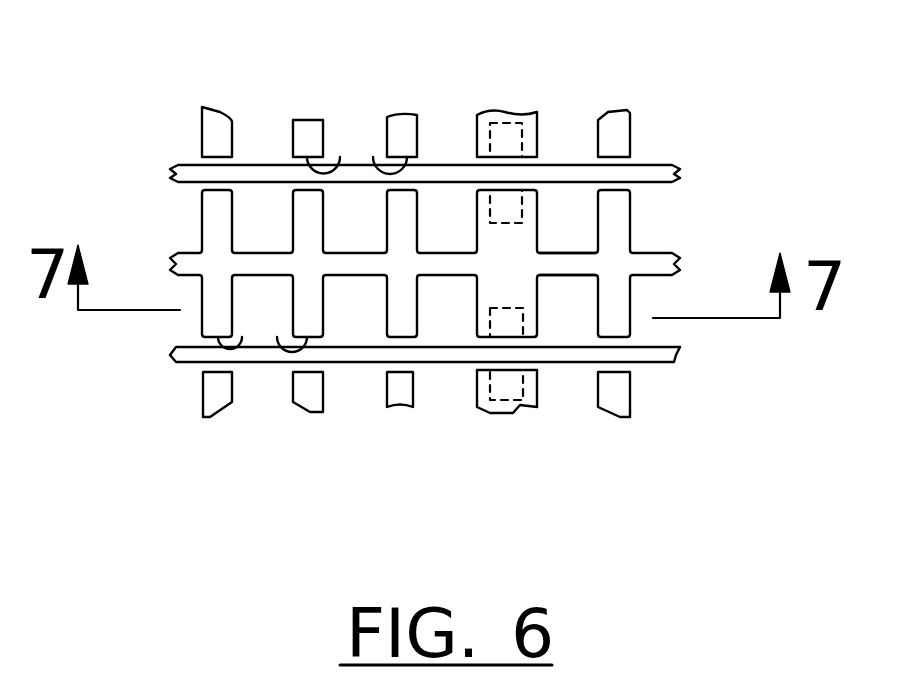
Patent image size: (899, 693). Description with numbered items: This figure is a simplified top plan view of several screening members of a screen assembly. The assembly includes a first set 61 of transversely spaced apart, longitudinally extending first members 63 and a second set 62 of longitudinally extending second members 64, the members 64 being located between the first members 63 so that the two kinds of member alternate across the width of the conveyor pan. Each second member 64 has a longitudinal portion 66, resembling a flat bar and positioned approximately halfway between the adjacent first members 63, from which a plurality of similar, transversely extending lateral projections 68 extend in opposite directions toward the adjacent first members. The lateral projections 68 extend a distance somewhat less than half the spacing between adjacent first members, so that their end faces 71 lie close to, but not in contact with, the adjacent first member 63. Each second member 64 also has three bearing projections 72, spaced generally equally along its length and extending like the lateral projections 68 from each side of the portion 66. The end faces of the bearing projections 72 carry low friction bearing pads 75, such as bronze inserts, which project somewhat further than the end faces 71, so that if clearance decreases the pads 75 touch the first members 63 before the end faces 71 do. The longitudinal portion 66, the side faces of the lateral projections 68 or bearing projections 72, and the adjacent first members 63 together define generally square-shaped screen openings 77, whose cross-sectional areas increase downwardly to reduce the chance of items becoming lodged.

The first set of first members 61 is at (496, 241).
The first member 63 is at (558, 174).
The second set of second members 62 is at (474, 261).
The second member 64 is at (648, 240).
The longitudinal portion 66 is at (570, 265).
The lateral projection 68 is at (400, 113).
The end face 71 is at (307, 190).
The bearing projection 72 is at (523, 237).
The bearing pad 75 is at (521, 330).
The screen opening 77 is at (375, 224).